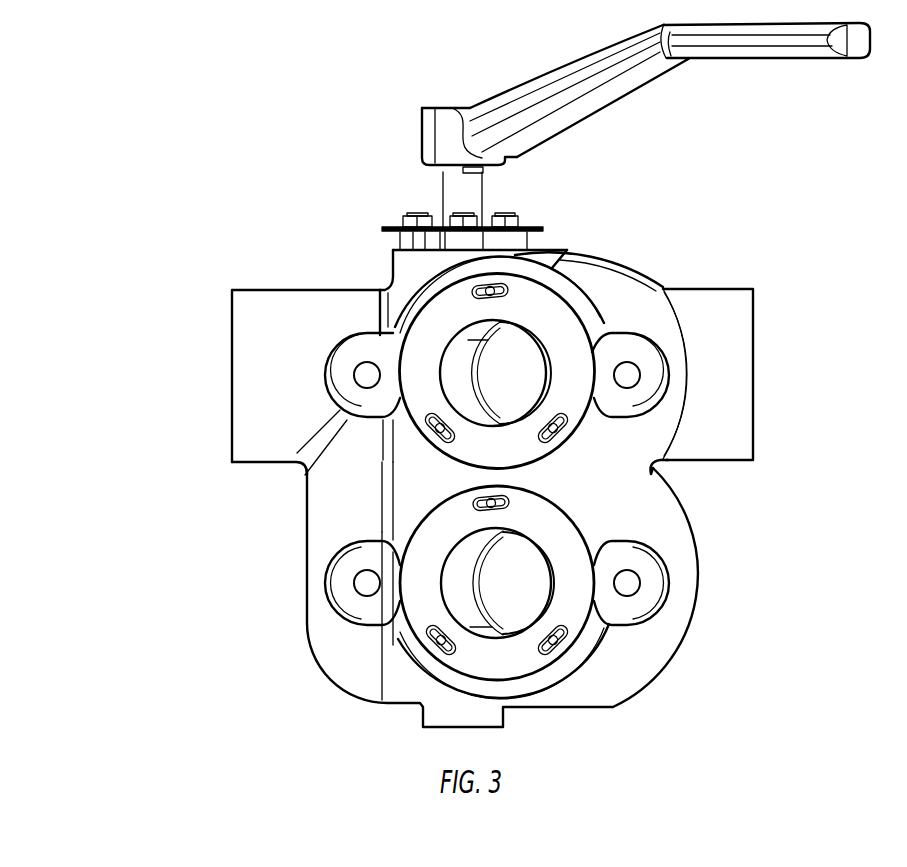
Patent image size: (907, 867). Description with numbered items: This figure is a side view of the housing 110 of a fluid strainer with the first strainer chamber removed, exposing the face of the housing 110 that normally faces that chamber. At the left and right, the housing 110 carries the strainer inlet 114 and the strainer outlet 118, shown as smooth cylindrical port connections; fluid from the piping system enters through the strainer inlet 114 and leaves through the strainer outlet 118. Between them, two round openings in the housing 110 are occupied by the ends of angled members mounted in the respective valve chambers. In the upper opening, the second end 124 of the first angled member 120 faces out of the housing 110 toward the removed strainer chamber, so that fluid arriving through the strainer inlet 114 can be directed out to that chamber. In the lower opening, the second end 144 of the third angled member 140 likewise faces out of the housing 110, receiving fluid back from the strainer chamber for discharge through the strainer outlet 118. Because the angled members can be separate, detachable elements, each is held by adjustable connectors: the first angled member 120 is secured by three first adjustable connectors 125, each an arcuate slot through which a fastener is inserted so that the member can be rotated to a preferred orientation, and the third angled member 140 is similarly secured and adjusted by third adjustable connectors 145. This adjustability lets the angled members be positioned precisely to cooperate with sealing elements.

The housing 110 is at (376, 263).
The strainer inlet 114 is at (753, 387).
The strainer outlet 118 is at (231, 342).
The first angled member 120 is at (542, 293).
The second end of first angled member 124 is at (520, 333).
The first adjustable connectors 125 is at (560, 405).
The third angled member 140 is at (530, 676).
The second end of third angled member 144 is at (530, 630).
The third adjustable connectors 145 is at (550, 612).